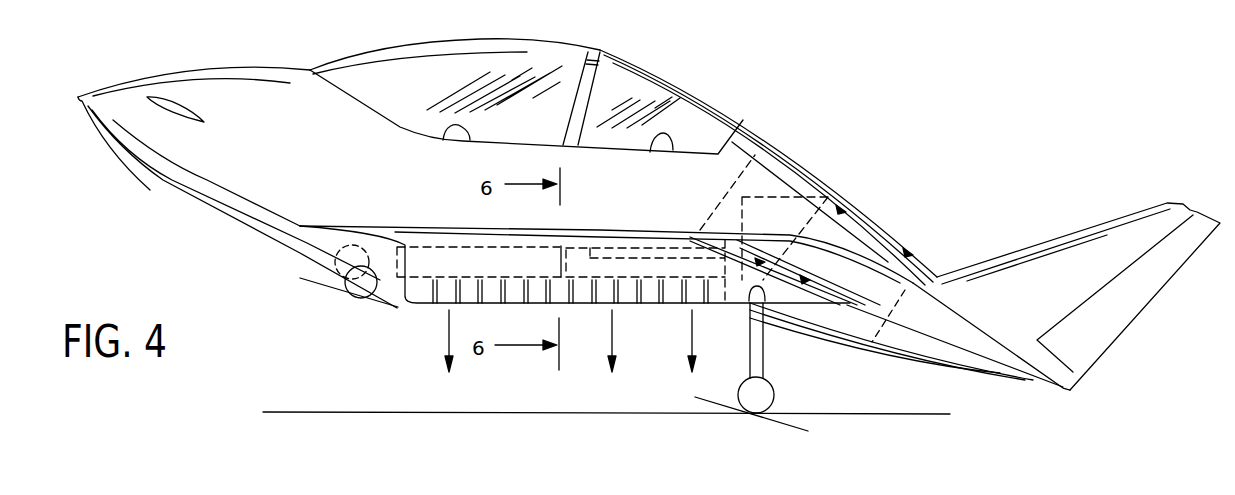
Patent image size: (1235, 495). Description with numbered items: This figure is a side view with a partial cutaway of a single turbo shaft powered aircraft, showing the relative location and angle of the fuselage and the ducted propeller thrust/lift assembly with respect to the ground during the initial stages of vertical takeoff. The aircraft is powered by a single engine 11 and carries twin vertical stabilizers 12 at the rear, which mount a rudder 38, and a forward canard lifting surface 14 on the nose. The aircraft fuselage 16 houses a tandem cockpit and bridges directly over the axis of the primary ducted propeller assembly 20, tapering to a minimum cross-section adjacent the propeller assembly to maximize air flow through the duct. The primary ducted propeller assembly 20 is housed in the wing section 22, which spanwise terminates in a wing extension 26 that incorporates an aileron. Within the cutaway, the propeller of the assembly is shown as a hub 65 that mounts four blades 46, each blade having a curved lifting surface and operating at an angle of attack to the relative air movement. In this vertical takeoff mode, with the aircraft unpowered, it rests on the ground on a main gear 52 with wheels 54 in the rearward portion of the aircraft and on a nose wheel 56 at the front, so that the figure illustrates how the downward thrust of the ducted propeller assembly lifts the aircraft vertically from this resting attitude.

The engine 11 is at (878, 240).
The vertical stabilizers 12 is at (1120, 230).
The forward canard lifting surface 14 is at (157, 97).
The aircraft fuselage 16 is at (247, 73).
The primary ducted propeller assembly 20 is at (632, 309).
The wing section 22 is at (352, 223).
The wing extension 26 is at (716, 238).
The rudder 38 is at (1173, 268).
The blades 46 is at (652, 243).
The main gear 52 is at (757, 348).
The wheels 54 is at (775, 398).
The nose wheel 56 is at (357, 288).
The hub 65 is at (597, 243).